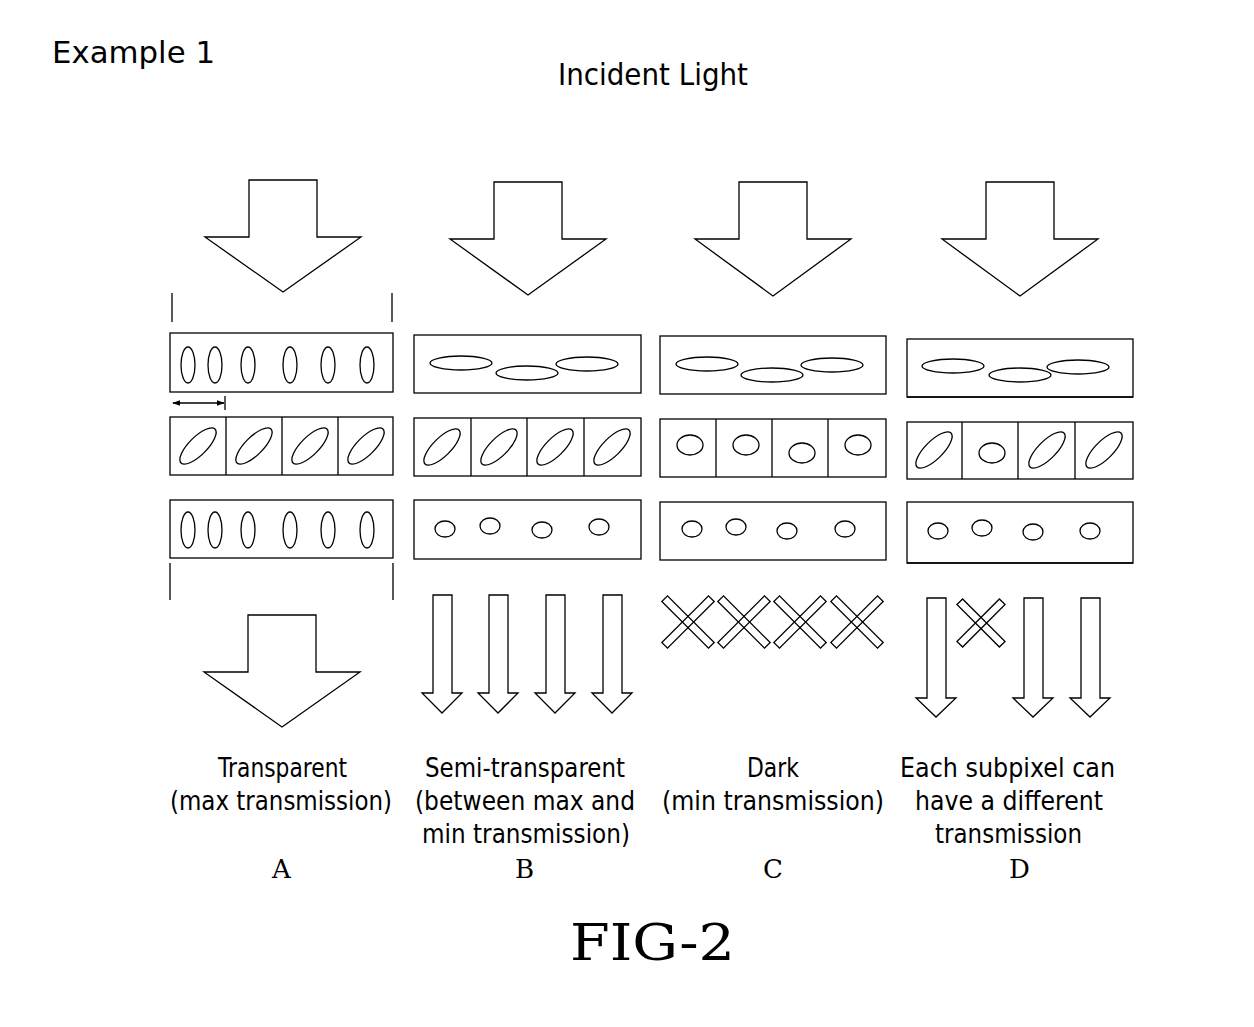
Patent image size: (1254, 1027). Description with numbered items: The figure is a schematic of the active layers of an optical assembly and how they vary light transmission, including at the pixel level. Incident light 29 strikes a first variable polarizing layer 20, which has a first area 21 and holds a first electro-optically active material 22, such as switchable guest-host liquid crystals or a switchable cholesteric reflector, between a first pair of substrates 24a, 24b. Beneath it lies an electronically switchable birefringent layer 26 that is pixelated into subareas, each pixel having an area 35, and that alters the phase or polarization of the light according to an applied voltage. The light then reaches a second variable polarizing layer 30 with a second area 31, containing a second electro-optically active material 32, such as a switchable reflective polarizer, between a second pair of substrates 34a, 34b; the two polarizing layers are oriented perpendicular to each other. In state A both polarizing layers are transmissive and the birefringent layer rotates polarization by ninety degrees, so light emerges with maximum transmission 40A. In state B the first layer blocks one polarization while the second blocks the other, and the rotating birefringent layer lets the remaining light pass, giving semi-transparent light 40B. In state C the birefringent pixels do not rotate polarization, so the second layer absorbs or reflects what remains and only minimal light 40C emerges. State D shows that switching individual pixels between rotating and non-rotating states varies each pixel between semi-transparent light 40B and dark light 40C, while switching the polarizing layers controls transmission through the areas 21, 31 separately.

The first variable polarizing layer 20 is at (168, 340).
The first area 21 is at (173, 308).
The first electro-optically active material 22 is at (1090, 367).
The first substrate of first pair 24a is at (1087, 339).
The second substrate of first pair 24b is at (1108, 397).
The electronically switchable birefringent layer 26 is at (168, 448).
The incident light 29 is at (291, 180).
The second variable polarizing layer 30 is at (168, 532).
The second area 31 is at (391, 587).
The second electro-optically active material 32 is at (1098, 531).
The first substrate of second pair 34a is at (1108, 503).
The second substrate of second pair 34b is at (1115, 563).
The pixel area 35 is at (192, 402).
The maximum transmission light 40A is at (248, 690).
The semi-transparent transmission light 40B is at (433, 660).
The minimum transmission light 40C is at (768, 648).